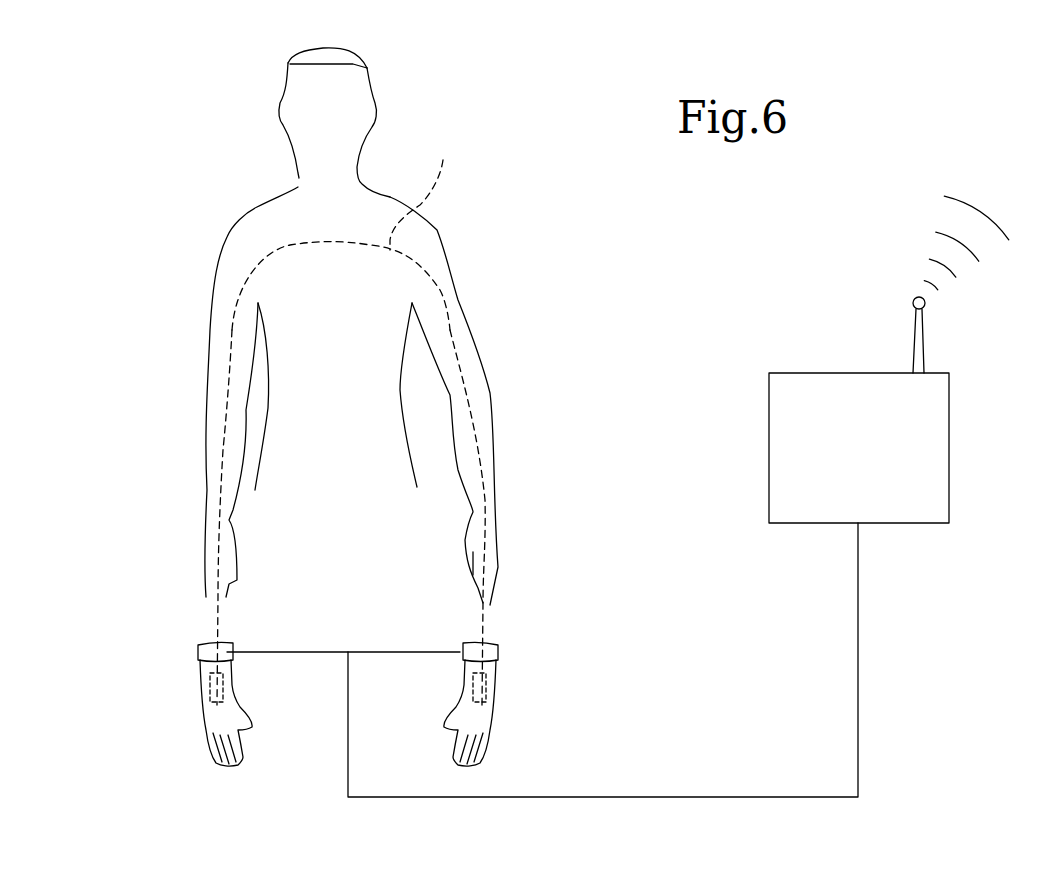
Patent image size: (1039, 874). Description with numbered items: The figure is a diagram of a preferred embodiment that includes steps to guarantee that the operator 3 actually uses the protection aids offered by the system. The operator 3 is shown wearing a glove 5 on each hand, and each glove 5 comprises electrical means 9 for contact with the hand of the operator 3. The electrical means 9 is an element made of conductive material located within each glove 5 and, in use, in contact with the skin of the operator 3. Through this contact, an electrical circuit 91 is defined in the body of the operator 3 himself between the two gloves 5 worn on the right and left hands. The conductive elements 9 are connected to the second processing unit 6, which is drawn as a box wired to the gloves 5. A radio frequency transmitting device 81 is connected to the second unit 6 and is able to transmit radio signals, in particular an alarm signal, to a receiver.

The operator 3 is at (243, 216).
The electrical circuit 91 is at (351, 419).
The glove 5 is at (212, 720).
The electrical means 9 is at (212, 687).
The second unit 6 is at (848, 459).
The radio frequency transmitting device 81 is at (948, 340).